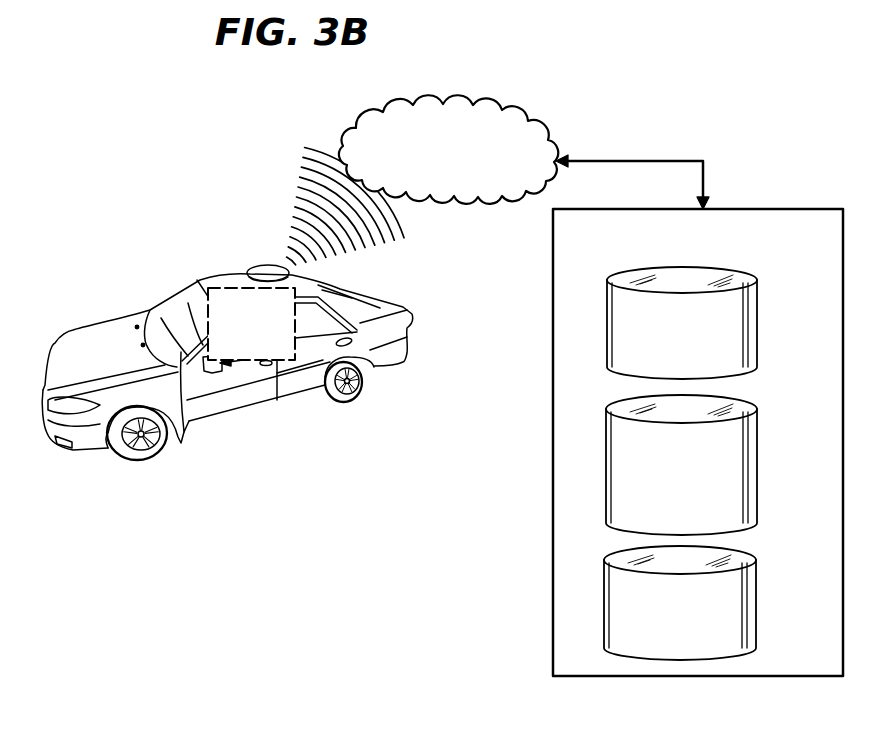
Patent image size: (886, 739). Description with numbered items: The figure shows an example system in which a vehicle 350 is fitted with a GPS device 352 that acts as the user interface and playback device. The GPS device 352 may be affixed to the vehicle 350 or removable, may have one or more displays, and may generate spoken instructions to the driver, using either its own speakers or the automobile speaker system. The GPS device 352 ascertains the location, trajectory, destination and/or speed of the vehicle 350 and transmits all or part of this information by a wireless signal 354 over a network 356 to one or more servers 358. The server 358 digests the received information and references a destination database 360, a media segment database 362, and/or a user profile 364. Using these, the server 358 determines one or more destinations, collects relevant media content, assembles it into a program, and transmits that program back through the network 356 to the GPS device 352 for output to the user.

The vehicle 350 is at (105, 335).
The GPS device 352 is at (230, 288).
The wireless signal 354 is at (298, 184).
The network 356 is at (446, 107).
The server 358 is at (777, 215).
The destination database 360 is at (747, 323).
The media segment database 362 is at (747, 463).
The user profile 364 is at (747, 608).